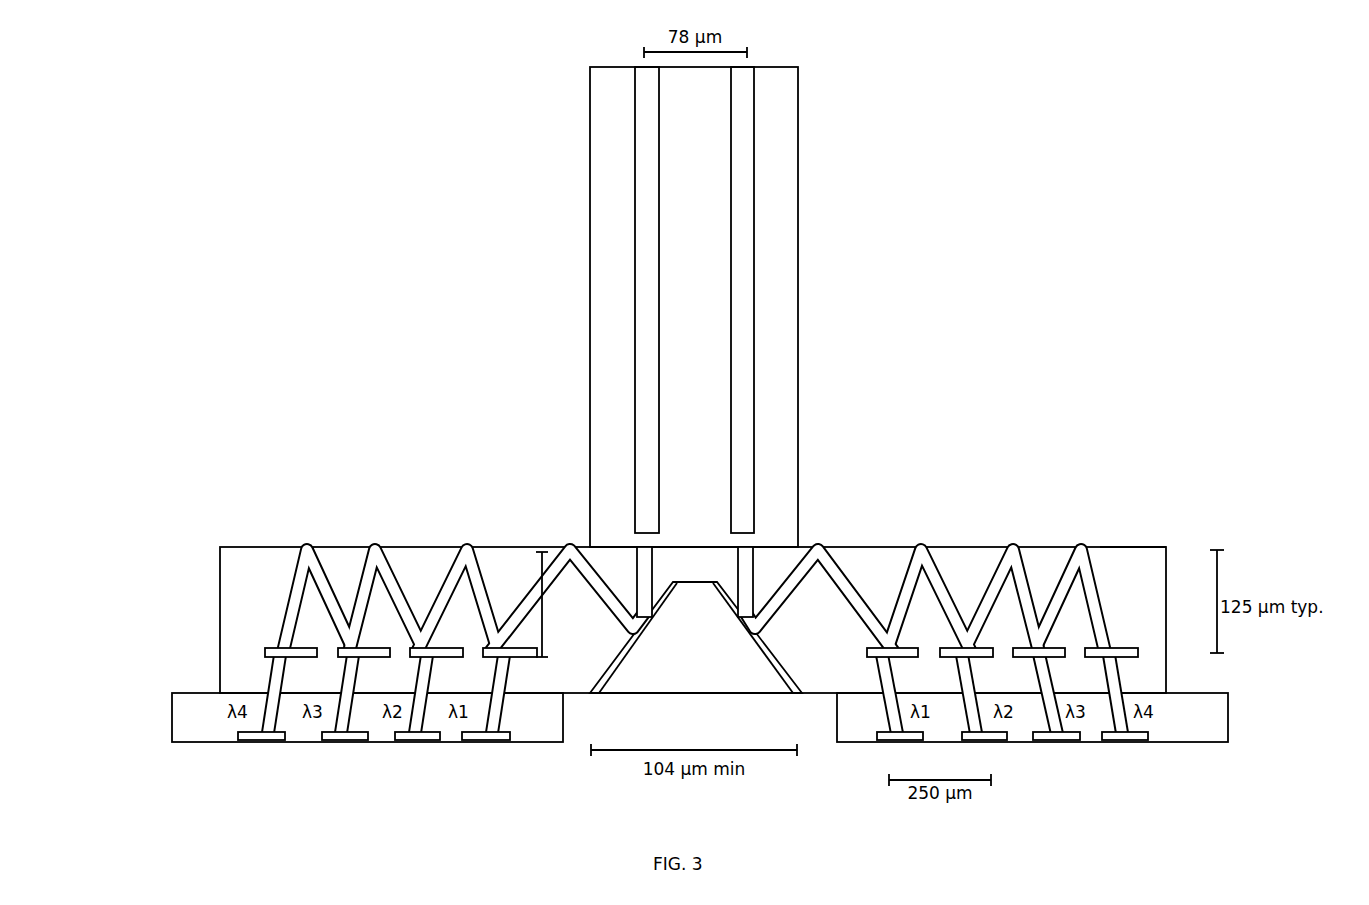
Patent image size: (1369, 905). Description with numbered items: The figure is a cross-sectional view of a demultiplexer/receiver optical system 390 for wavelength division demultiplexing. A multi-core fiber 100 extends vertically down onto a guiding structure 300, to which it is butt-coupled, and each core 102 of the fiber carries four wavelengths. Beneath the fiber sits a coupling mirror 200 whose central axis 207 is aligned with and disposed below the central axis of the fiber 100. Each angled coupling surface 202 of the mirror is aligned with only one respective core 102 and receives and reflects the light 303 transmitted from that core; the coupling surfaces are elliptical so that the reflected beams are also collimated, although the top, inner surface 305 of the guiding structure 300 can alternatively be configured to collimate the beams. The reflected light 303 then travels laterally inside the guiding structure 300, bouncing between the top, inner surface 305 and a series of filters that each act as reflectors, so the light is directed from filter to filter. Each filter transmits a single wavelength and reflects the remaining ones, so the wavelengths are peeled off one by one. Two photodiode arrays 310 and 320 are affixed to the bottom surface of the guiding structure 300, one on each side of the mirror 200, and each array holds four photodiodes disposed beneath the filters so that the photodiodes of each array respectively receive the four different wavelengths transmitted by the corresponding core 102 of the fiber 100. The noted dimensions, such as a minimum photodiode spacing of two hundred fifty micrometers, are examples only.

The demultiplexer/receiver optical system 390 is at (862, 22).
The multi-core fiber 100 is at (798, 420).
The core 102 is at (754, 287).
The coupling mirror 200 is at (700, 659).
The coupling surface 202 is at (727, 595).
The central axis 207 is at (705, 595).
The guiding structure 300 is at (1138, 547).
The light 303 is at (843, 573).
The top, inner surface 305 is at (1118, 556).
The photodiode array 310 is at (172, 735).
The photodiode array 320 is at (1228, 731).